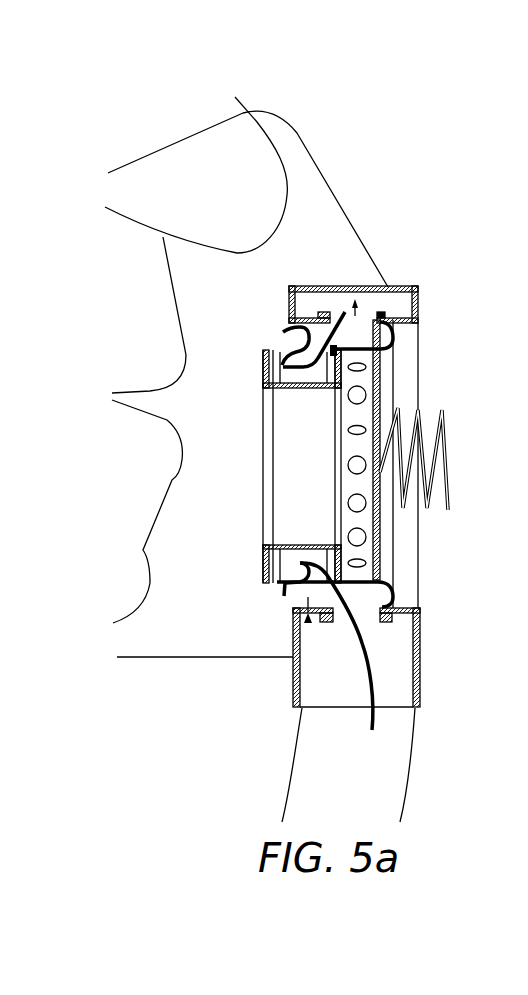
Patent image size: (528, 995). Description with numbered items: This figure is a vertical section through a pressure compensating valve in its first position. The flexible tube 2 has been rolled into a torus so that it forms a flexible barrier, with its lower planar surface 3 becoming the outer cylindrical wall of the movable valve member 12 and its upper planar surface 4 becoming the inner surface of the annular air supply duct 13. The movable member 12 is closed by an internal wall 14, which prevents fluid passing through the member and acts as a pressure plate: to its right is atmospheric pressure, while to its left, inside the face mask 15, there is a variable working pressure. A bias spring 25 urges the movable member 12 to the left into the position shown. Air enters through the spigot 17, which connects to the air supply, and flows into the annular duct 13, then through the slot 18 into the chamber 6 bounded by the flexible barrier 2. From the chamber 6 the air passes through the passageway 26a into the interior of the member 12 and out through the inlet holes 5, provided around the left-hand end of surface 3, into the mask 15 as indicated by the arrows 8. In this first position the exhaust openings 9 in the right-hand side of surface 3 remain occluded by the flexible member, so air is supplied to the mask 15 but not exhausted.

The tube 2 is at (393, 377).
The lower planar surface 3 is at (247, 336).
The upper planar surface 4 is at (440, 309).
The holes 5 is at (278, 543).
The chamber 6 is at (308, 625).
The arrows 8 is at (262, 353).
The exhaust openings 9 is at (348, 428).
The movable valve member 12 is at (285, 415).
The annular air supply duct 13 is at (372, 283).
The internal wall 14 is at (380, 397).
The face mask 15 is at (333, 190).
The spigot 17 is at (415, 765).
The slot 18 is at (360, 287).
The bias spring 25 is at (445, 480).
The passageway 26a is at (292, 350).